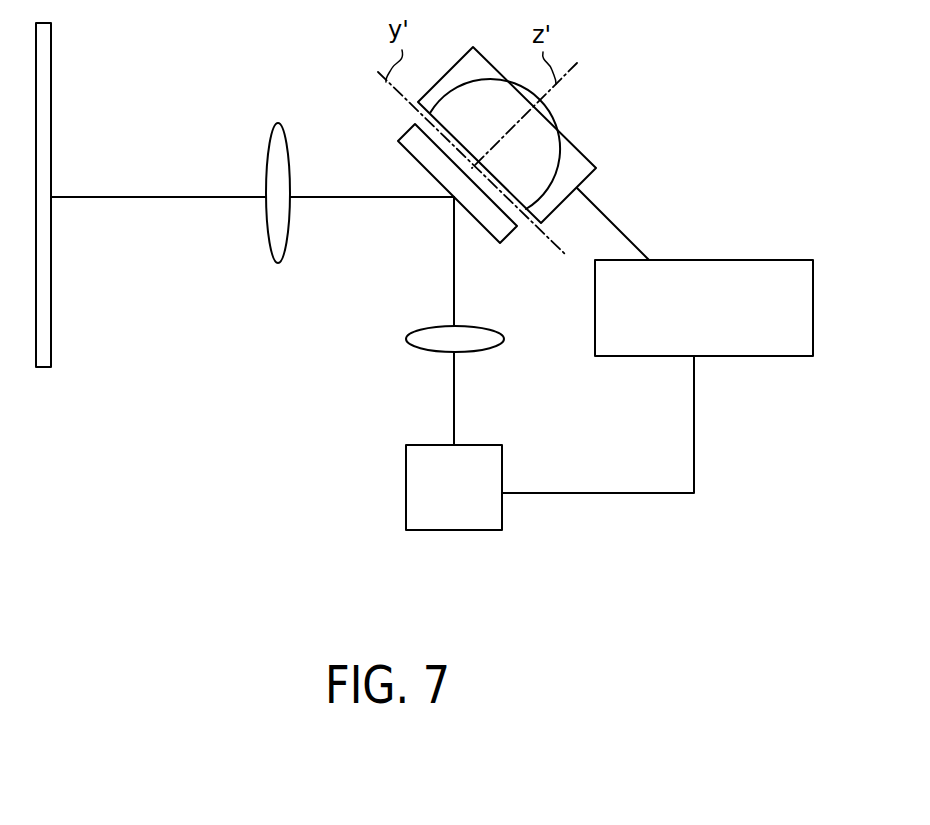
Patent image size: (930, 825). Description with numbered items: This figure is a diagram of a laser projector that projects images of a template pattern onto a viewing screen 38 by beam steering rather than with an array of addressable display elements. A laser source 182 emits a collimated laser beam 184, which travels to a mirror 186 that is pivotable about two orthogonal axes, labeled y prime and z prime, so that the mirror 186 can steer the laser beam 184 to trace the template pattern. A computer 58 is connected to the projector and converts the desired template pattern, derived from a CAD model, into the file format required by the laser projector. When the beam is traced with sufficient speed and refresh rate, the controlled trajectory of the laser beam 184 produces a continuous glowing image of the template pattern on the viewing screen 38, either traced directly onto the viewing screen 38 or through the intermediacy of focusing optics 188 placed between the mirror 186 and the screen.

The viewing screen 38 is at (48, 75).
The computer 58 is at (704, 308).
The laser source 182 is at (454, 487).
The laser beam 184 is at (454, 263).
The mirror 186 is at (415, 163).
The focusing optics 188 is at (278, 263).